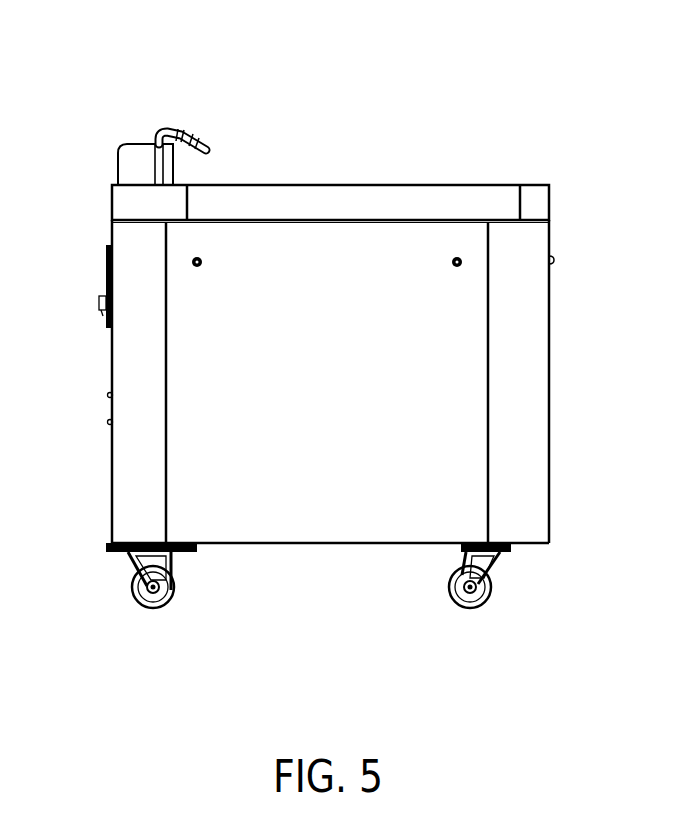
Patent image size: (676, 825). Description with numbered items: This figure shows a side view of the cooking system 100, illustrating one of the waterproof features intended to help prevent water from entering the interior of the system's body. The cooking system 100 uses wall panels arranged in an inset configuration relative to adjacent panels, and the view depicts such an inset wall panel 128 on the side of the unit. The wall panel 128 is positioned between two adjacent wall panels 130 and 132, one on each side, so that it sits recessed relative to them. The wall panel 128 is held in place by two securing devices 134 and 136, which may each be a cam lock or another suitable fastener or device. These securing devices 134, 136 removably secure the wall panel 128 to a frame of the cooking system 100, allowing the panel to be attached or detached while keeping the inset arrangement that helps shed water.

The cooking system 100 is at (496, 72).
The inset wall panel 128 is at (310, 543).
The adjacent wall panel 130 is at (113, 472).
The adjacent wall panel 132 is at (549, 472).
The securing device 134 is at (203, 265).
The securing device 136 is at (451, 265).